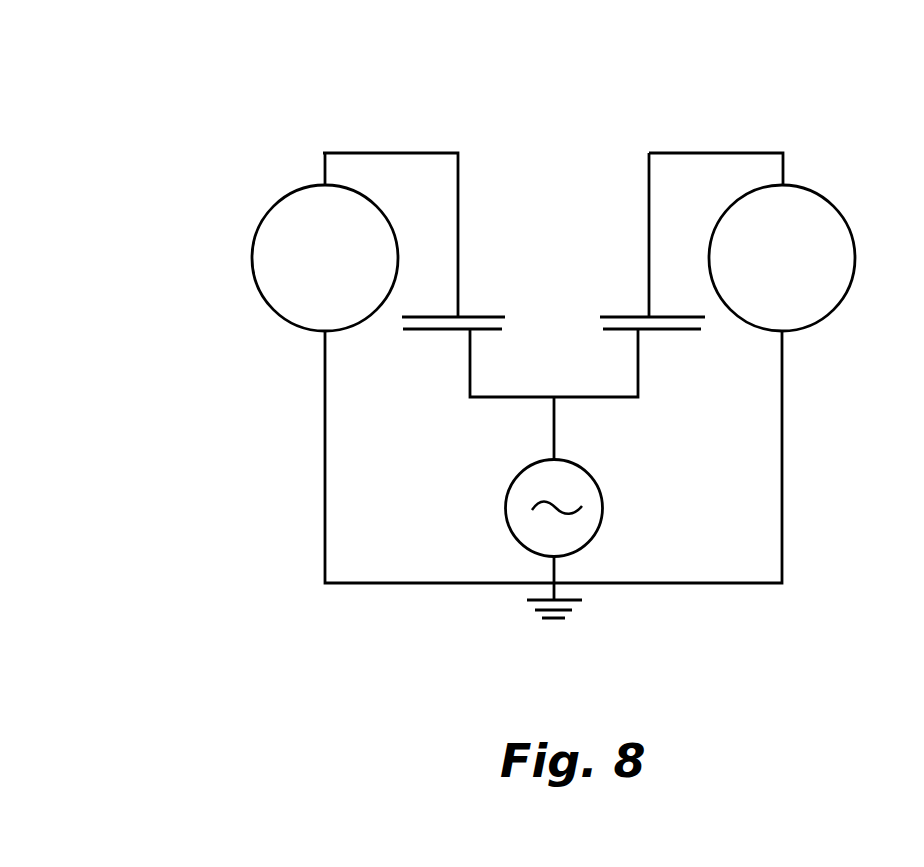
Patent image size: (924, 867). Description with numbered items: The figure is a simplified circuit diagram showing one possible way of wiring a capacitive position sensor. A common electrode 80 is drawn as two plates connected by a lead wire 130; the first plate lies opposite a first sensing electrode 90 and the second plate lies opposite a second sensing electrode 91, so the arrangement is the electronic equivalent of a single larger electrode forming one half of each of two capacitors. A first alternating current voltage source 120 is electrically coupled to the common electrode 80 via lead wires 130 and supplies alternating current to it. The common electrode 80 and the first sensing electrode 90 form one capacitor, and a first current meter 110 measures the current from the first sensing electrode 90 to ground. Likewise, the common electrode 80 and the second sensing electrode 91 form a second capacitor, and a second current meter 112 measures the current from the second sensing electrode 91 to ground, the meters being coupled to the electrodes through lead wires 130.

The common electrode 80 is at (608, 330).
The first sensing electrode 90 is at (475, 317).
The second sensing electrode 91 is at (627, 317).
The first current meter 110 is at (258, 292).
The second current meter 112 is at (828, 198).
The first alternating current voltage source 120 is at (598, 528).
The lead wire 130 is at (422, 153).